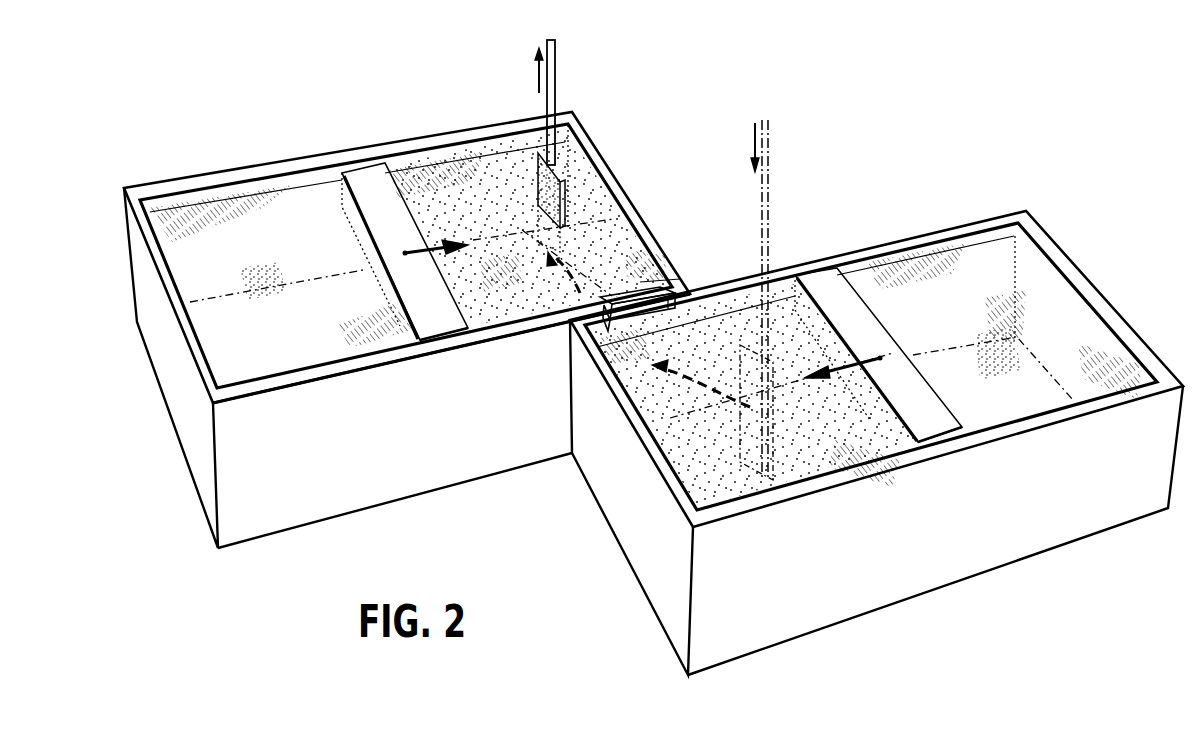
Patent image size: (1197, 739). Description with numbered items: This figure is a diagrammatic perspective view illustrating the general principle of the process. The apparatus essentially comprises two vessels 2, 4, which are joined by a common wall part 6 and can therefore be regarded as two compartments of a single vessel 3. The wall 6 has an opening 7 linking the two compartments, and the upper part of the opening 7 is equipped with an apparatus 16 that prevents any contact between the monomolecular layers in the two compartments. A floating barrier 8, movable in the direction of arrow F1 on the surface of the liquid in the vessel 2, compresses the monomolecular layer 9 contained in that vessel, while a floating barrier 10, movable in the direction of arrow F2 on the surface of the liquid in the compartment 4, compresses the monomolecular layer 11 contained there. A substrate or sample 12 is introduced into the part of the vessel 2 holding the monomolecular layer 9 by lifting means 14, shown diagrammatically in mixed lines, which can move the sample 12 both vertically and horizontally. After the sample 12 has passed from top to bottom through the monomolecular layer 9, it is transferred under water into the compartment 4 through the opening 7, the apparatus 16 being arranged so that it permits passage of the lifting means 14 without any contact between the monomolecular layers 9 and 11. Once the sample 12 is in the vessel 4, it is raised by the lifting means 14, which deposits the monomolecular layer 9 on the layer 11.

The vessel 2 is at (942, 228).
The single vessel 3 is at (908, 135).
The vessel 4 is at (197, 178).
The common wall part 6 is at (673, 297).
The opening 7 is at (622, 381).
The floating barrier 8 is at (932, 417).
The monomolecular layer 9 is at (727, 482).
The floating barrier 10 is at (372, 186).
The monomolecular layer 11 is at (486, 180).
The substrate or sample 12 is at (565, 182).
The lifting means 14 is at (555, 64).
The apparatus 16 is at (624, 292).
The arrow F1 is at (882, 357).
The arrow F2 is at (404, 253).